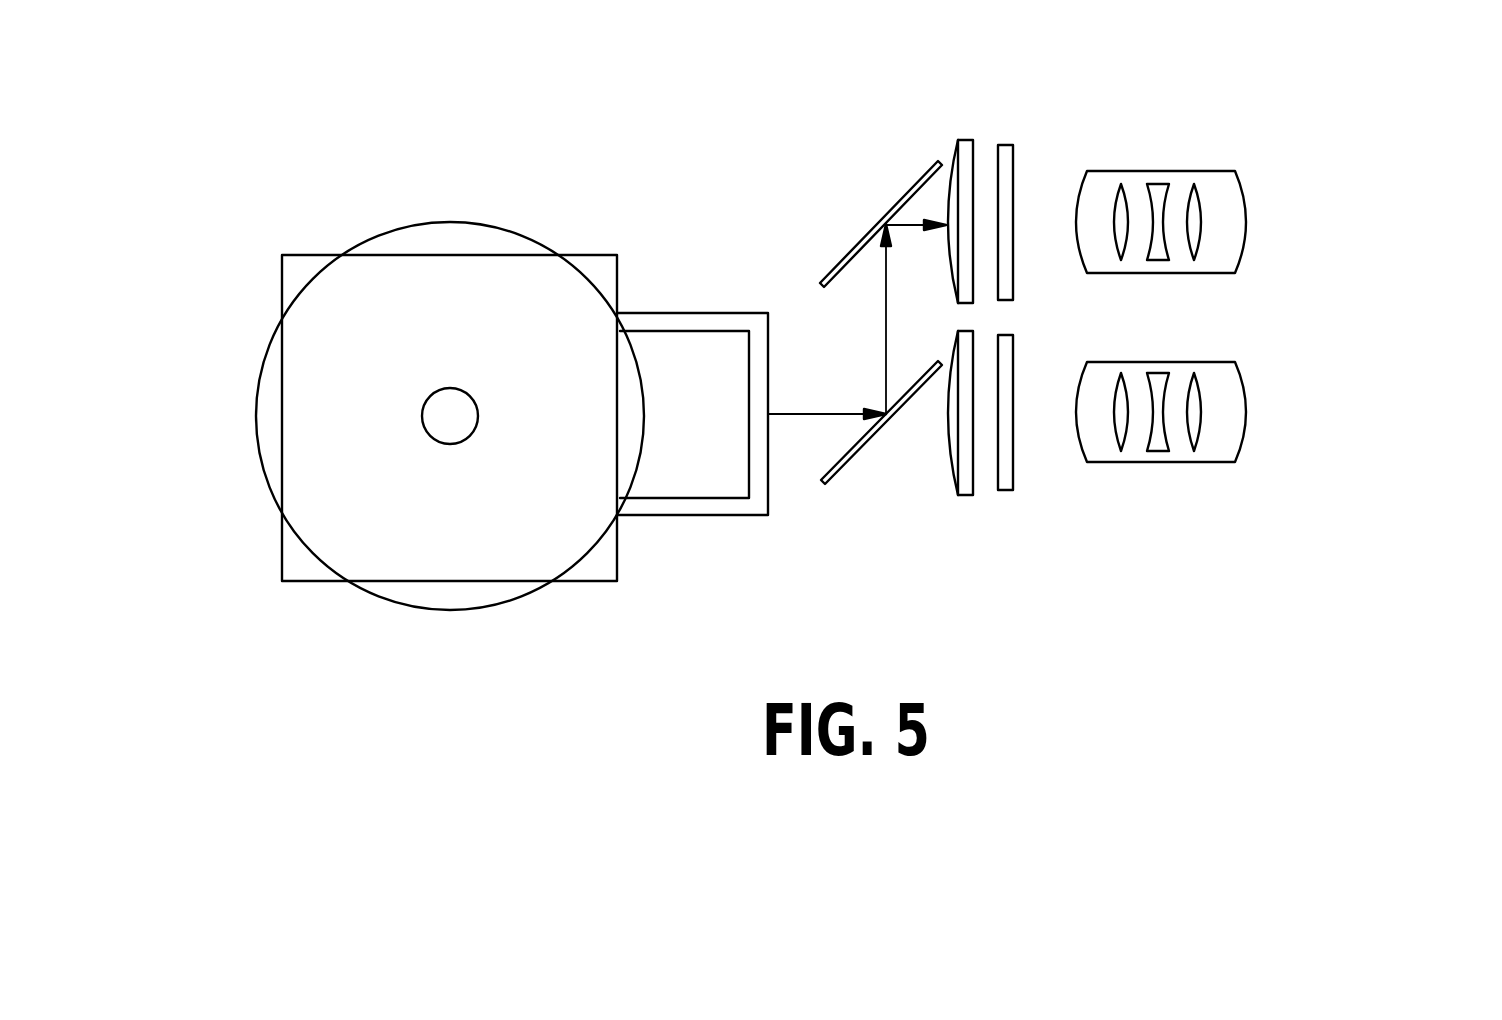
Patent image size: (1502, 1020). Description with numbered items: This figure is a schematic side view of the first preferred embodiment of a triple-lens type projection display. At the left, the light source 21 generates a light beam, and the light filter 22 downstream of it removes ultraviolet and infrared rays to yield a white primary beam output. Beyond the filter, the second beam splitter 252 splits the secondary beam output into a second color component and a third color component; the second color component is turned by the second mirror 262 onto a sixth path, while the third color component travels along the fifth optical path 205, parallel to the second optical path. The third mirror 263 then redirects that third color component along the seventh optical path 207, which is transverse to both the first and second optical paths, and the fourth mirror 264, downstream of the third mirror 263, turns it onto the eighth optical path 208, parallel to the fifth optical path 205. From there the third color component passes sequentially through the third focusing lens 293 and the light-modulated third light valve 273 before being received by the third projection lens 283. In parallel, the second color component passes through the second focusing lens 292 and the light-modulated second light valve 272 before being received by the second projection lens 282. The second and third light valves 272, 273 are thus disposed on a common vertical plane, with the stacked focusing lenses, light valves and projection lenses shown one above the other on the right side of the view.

The light source 21 is at (292, 446).
The light filter 22 is at (293, 258).
The second beam splitter 252 is at (682, 322).
The second mirror 262 is at (660, 480).
The fifth optical path 205 is at (792, 417).
The seventh optical path 207 is at (880, 302).
The eighth optical path 208 is at (913, 227).
The third mirror 263 is at (850, 462).
The fourth mirror 264 is at (822, 283).
The third focusing lens 293 is at (960, 140).
The second focusing lens 292 is at (963, 490).
The third light valve 273 is at (1008, 148).
The second light valve 272 is at (1008, 483).
The third projection lens 283 is at (1247, 200).
The second projection lens 282 is at (1228, 440).